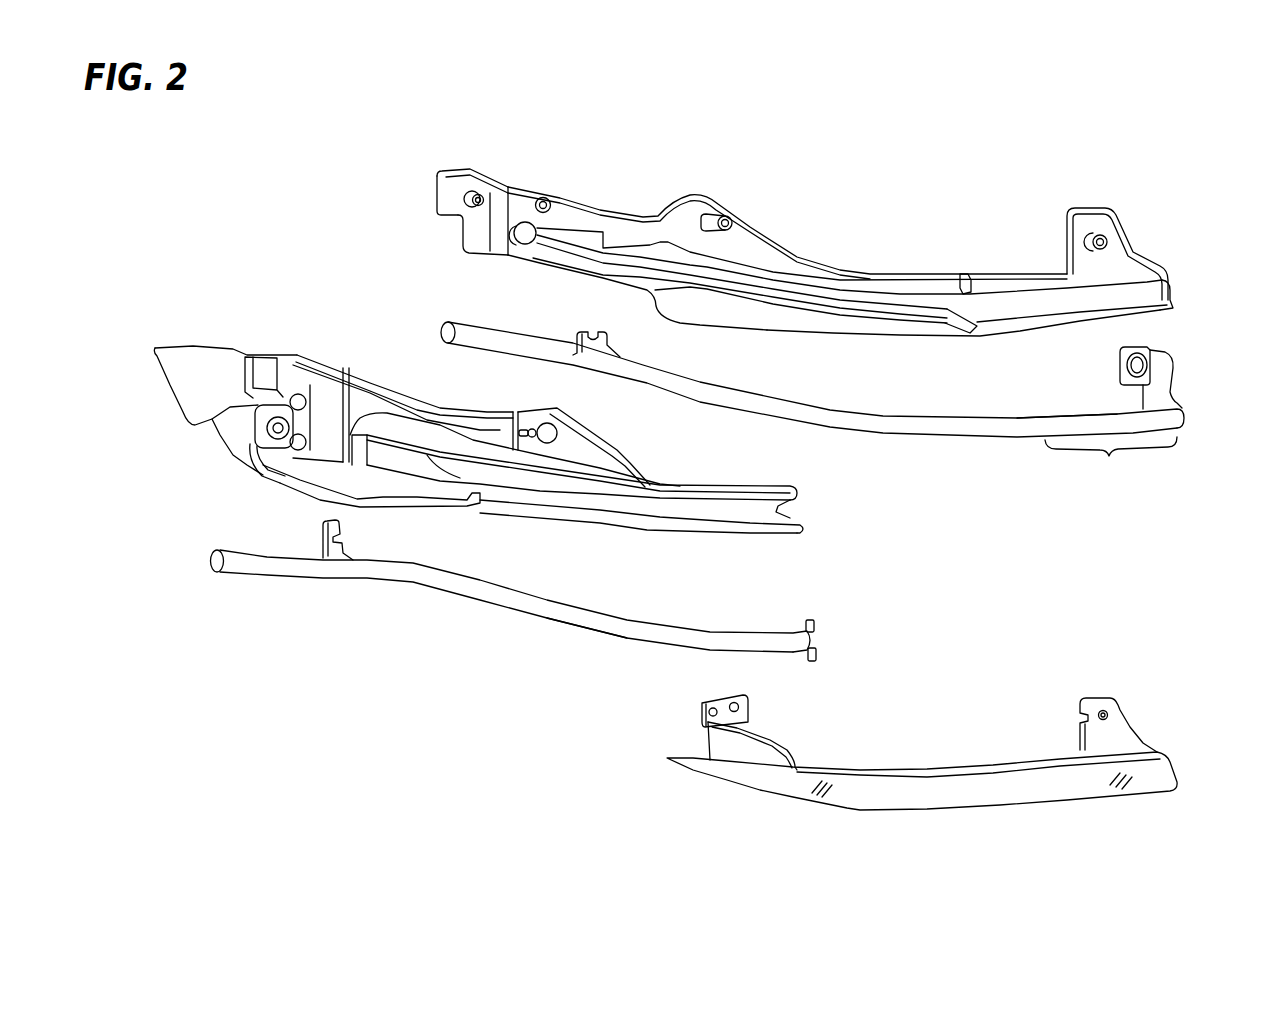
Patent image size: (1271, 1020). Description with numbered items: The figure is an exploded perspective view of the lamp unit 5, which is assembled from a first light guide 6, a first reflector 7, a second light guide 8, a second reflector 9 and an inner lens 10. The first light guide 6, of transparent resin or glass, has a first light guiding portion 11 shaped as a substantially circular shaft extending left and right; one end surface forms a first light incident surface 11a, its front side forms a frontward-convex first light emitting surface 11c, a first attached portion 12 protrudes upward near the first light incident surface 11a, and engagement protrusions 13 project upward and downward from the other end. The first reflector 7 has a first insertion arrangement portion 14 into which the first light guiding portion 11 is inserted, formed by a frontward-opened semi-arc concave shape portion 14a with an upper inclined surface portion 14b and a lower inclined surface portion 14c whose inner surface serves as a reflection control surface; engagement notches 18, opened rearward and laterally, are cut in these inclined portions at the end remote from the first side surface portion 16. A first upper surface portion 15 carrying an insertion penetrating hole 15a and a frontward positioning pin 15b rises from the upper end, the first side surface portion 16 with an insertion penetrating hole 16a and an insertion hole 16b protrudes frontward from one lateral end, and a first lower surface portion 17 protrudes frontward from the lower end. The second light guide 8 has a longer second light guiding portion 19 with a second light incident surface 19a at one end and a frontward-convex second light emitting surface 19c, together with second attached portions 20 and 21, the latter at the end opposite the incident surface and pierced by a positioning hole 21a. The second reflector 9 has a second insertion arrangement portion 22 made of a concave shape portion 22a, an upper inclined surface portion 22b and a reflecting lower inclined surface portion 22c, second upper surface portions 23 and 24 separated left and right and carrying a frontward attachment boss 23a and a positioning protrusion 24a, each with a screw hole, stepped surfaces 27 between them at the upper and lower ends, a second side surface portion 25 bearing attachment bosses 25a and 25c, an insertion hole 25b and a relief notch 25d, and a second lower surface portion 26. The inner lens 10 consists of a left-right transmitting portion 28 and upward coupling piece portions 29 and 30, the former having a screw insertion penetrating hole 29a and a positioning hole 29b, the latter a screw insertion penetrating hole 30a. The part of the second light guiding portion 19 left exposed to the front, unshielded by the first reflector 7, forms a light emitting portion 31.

The lamp unit 5 is at (333, 166).
The first light guide 6 is at (710, 630).
The first reflector 7 is at (733, 483).
The second light guide 8 is at (770, 407).
The second reflector 9 is at (813, 250).
The inner lens 10 is at (973, 767).
The first light guiding portion 11 is at (537, 612).
The first light incident surface 11a is at (212, 548).
The first light emitting surface 11c is at (567, 617).
The first attached portion 12 is at (323, 530).
The engagement protrusions 13 is at (813, 620).
The first insertion arrangement portion 14 is at (677, 483).
The concave shape portion 14a is at (780, 503).
The upper inclined surface portion 14b is at (760, 493).
The lower inclined surface portion 14c is at (763, 527).
The first upper surface portion 15 is at (597, 437).
The insertion penetrating hole 15a is at (563, 430).
The positioning pin 15b is at (537, 427).
The first side surface portion 16 is at (283, 373).
The insertion penetrating hole 16a is at (298, 393).
The insertion hole 16b is at (295, 465).
The first lower surface portion 17 is at (390, 487).
The engagement notches 18 is at (800, 520).
The second light guiding portion 19 is at (883, 423).
The second light incident surface 19a is at (445, 322).
The second light emitting surface 19c is at (1070, 423).
The second attached portion 20 is at (575, 332).
The second attached portion 21 is at (1165, 353).
The positioning hole 21a is at (1140, 348).
The second insertion arrangement portion 22 is at (877, 300).
The concave shape portion 22a is at (907, 303).
The upper inclined surface portion 22b is at (1000, 287).
The lower inclined surface portion 22c is at (1025, 333).
The second upper surface portion 23 is at (745, 210).
The attachment boss 23a is at (713, 213).
The second upper surface portion 24 is at (1077, 207).
The positioning protrusion 24a is at (1094, 240).
The second side surface portion 25 is at (457, 178).
The attachment boss 25a is at (539, 202).
The insertion hole 25b is at (520, 247).
The attachment boss 25c is at (472, 195).
The relief notch 25d is at (457, 233).
The second lower surface portion 26 is at (723, 320).
The stepped surfaces 27 is at (963, 275).
The transmitting portion 28 is at (937, 770).
The coupling piece portion 29 is at (767, 740).
The screw insertion penetrating hole 29a is at (740, 705).
The positioning hole 29b is at (713, 708).
The coupling piece portion 30 is at (1107, 703).
The screw insertion penetrating hole 30a is at (1107, 717).
The light emitting portion 31 is at (1111, 459).